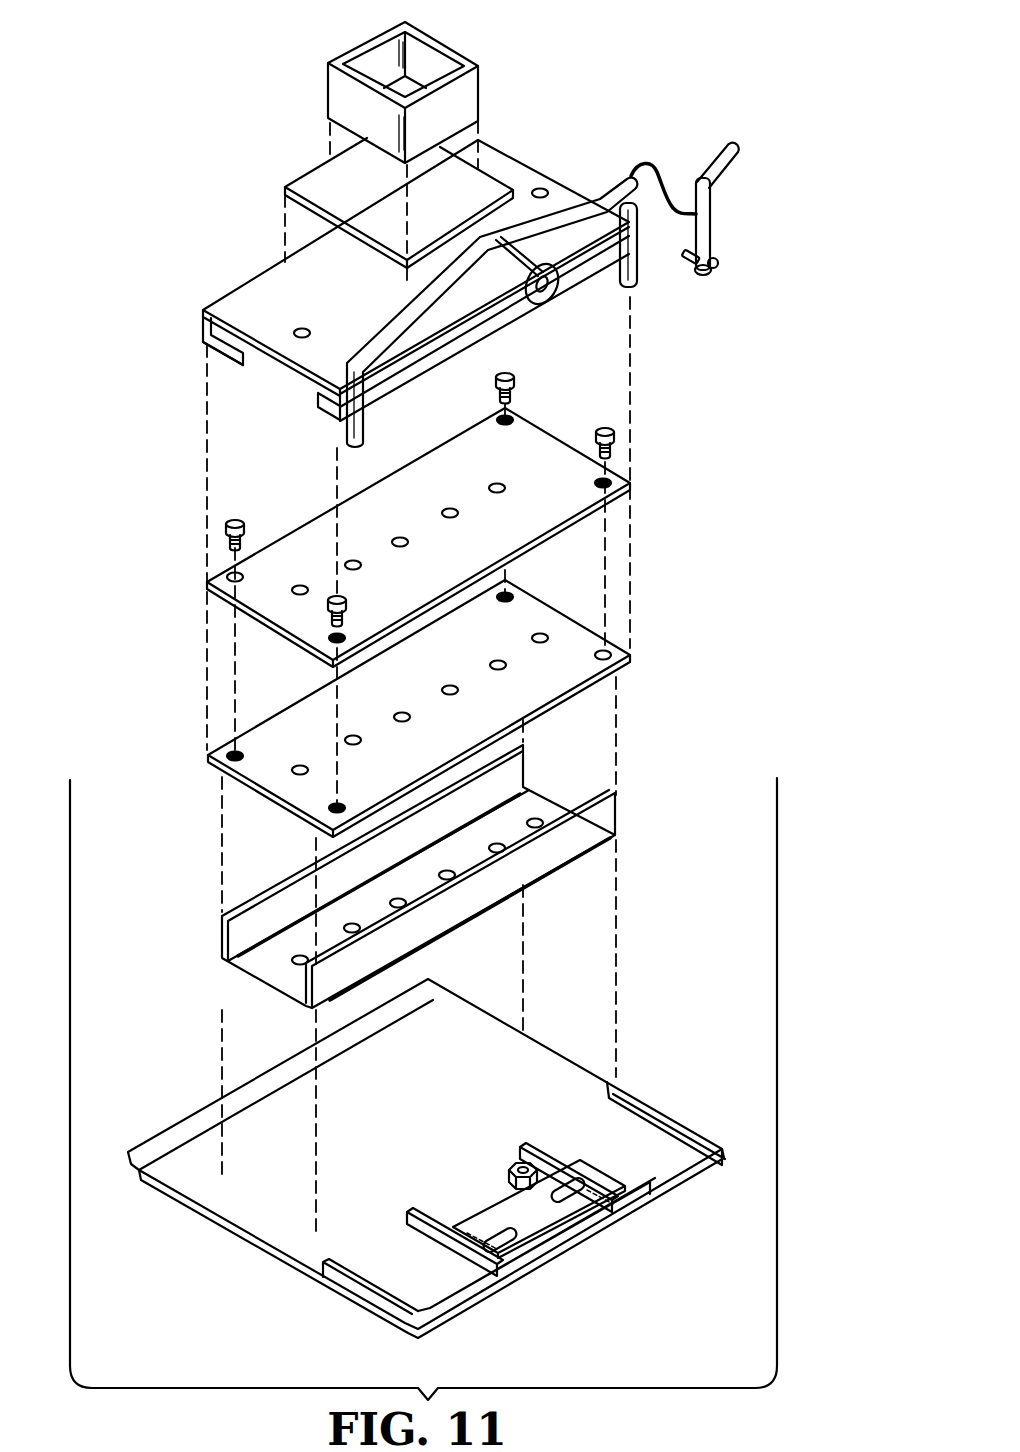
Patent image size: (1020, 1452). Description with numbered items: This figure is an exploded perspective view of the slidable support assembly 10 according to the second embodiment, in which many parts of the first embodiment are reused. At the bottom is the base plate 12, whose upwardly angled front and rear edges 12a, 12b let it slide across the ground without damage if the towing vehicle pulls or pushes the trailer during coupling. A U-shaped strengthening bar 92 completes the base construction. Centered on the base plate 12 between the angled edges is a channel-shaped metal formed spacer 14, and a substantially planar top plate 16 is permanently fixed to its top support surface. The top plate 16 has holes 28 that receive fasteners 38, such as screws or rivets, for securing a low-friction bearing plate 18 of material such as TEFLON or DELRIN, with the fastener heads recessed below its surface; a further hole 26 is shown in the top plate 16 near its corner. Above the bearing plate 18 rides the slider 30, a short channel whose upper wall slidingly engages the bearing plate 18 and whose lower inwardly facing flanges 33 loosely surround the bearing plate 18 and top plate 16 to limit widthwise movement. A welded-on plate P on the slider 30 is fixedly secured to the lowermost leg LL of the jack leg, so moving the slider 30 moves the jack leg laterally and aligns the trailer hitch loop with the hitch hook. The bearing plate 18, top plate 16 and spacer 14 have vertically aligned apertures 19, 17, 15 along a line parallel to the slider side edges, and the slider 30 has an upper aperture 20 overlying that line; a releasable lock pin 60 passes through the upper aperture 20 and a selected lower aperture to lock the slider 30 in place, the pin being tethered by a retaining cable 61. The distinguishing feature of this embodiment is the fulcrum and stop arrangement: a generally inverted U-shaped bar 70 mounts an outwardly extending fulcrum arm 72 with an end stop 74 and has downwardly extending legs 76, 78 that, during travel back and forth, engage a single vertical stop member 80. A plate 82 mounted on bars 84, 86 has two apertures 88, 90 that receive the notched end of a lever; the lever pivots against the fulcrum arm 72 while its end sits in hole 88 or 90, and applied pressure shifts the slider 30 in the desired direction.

The slidable support assembly 10 is at (660, 562).
The base plate 12 is at (549, 1056).
The upwardly angled front edge 12a is at (176, 1118).
The upwardly angled rear edge 12b is at (478, 1300).
The spacer 14 is at (548, 792).
The apertures in spacer 15 is at (293, 960).
The top plate 16 is at (312, 705).
The apertures in top plate 17 is at (300, 765).
The low-friction bearing plate 18 is at (318, 512).
The apertures in bearing plate 19 is at (302, 586).
The upper aperture 20 is at (304, 328).
The hole in lower plate 26 is at (597, 656).
The holes 28 is at (597, 485).
The slider 30 is at (246, 282).
The inwardly facing flanges 33 is at (218, 352).
The fasteners 38 is at (604, 428).
The releasable lock pin 60 is at (702, 172).
The retaining cable 61 is at (676, 206).
The inverted U-shaped bar 70 is at (641, 246).
The fulcrum arm 72 is at (501, 262).
The end stop 74 is at (547, 302).
The downwardly extending leg 76 is at (366, 436).
The downwardly extending leg 78 is at (624, 284).
The vertical stop member 80 is at (514, 1176).
The plate 82 is at (570, 1222).
The bar 84 is at (414, 1208).
The bar 86 is at (542, 1152).
The aperture 88 is at (490, 1234).
The aperture 90 is at (578, 1182).
The U-shaped strengthening bar 92 is at (637, 1108).
The lowermost leg LL is at (458, 108).
The plate P is at (371, 200).